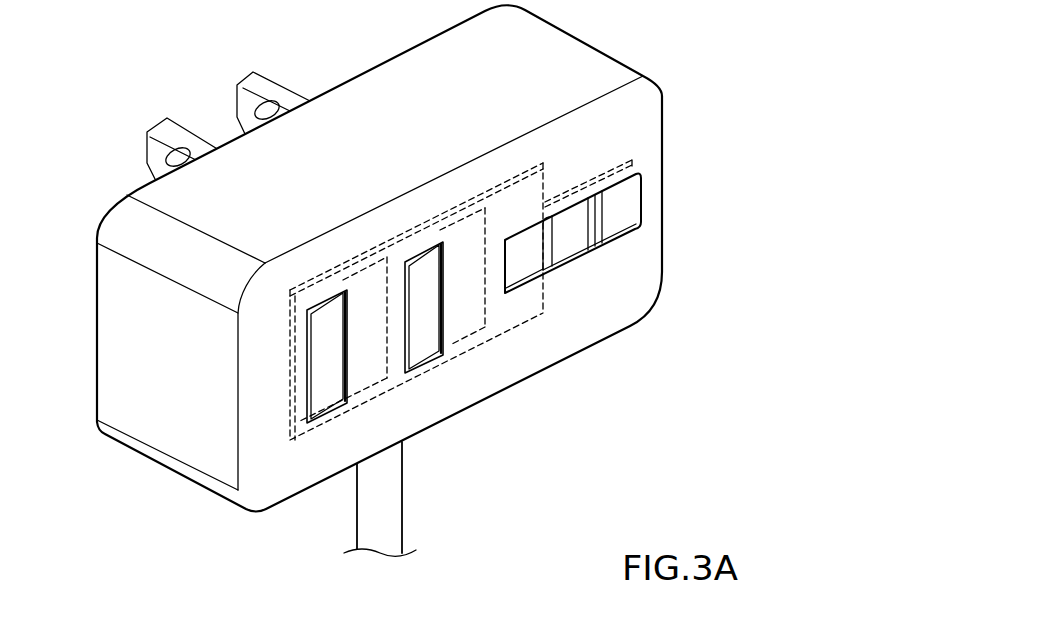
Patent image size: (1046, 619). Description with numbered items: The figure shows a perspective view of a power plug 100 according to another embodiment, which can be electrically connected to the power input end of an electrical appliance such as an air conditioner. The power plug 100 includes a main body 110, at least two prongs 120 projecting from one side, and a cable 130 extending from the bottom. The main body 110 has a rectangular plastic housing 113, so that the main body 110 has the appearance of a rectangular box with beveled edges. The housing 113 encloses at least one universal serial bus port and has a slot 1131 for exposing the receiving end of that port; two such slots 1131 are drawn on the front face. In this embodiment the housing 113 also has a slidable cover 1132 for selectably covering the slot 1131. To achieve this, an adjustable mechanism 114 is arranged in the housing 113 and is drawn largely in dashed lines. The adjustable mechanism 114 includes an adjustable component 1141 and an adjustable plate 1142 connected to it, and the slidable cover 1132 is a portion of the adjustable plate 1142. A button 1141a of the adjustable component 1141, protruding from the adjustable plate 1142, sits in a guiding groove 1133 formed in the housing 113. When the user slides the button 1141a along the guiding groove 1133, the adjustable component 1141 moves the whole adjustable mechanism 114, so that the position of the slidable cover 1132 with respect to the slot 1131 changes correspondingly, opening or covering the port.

The power plug 100 is at (80, 116).
The main body 110 is at (673, 125).
The housing 113 is at (370, 87).
The adjustable mechanism 114 is at (537, 62).
The prongs 120 is at (243, 100).
The cable 130 is at (405, 521).
The slot 1131 is at (320, 298).
The slidable cover 1132 is at (420, 323).
The guiding groove 1133 is at (523, 284).
The adjustable component 1141 is at (577, 203).
The button 1141a is at (572, 235).
The adjustable plate 1142 is at (513, 203).